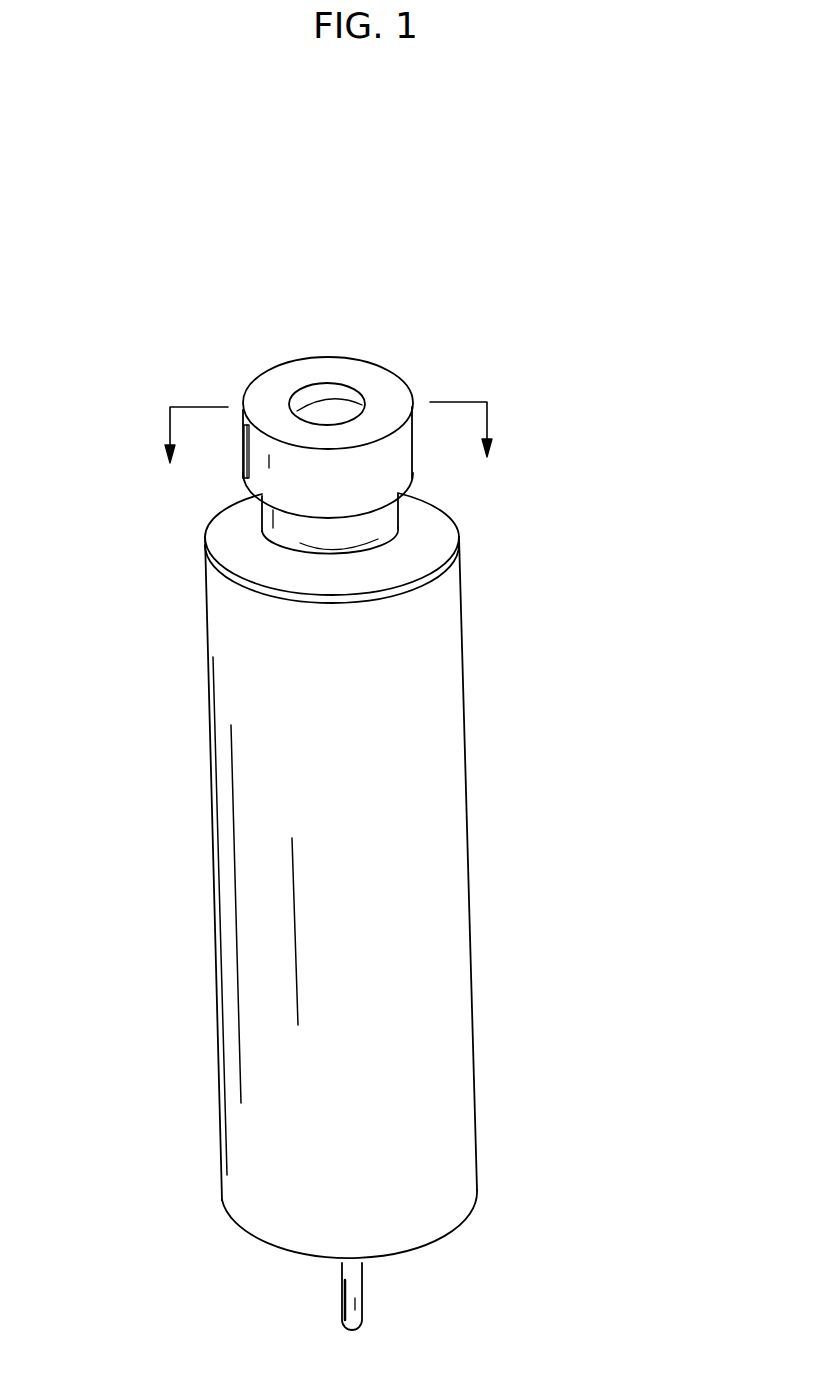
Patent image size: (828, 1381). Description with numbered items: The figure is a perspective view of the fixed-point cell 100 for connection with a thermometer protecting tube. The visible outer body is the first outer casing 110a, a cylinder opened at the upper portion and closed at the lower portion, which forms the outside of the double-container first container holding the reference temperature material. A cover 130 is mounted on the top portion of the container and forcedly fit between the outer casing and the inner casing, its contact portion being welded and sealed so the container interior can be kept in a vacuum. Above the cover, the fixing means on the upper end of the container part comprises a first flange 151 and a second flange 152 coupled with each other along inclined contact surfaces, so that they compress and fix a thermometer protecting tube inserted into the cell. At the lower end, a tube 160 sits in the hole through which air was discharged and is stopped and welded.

The fixed-point cell 100 is at (190, 277).
The first flange 151 is at (330, 412).
The second flange 152 is at (404, 455).
The cover 130 is at (430, 520).
The first outer casing 110a is at (453, 867).
The tube 160 is at (345, 1290).